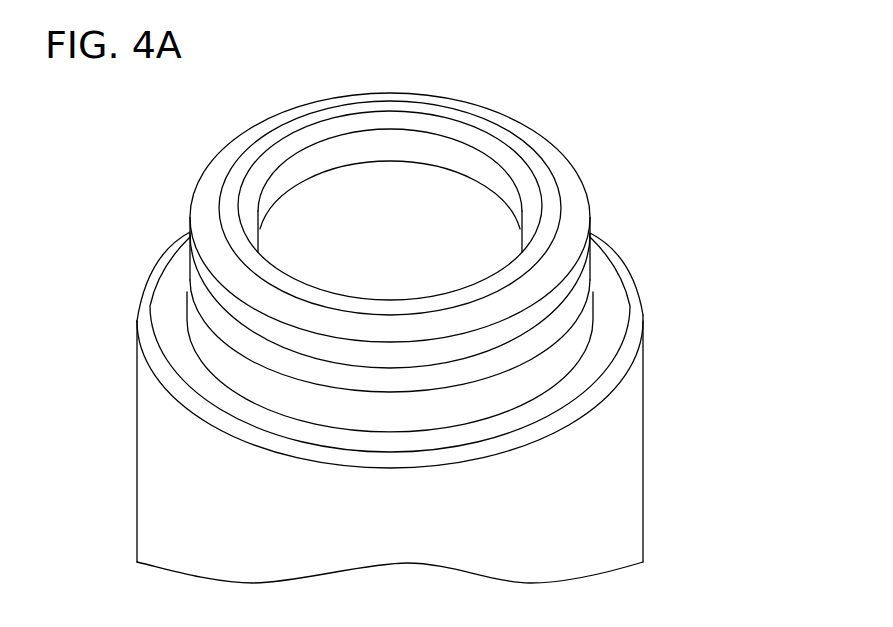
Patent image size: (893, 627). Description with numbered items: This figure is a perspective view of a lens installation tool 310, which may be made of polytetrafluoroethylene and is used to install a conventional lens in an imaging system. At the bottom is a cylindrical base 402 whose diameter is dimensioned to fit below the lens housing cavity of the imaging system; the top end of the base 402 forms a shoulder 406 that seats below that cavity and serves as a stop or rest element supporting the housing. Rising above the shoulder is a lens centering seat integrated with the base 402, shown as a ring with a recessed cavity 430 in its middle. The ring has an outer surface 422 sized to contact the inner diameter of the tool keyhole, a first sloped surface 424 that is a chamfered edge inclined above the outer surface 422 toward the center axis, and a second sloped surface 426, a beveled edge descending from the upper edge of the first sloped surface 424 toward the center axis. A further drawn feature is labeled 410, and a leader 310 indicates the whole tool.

The lens installation tool 310 is at (665, 90).
The base 402 is at (602, 478).
The shoulder 406 is at (645, 311).
The neck 410 is at (267, 358).
The outer surface 422 is at (232, 307).
The first sloped surface 424 is at (582, 177).
The second sloped surface 426 is at (530, 157).
The recessed cavity 430 is at (390, 207).